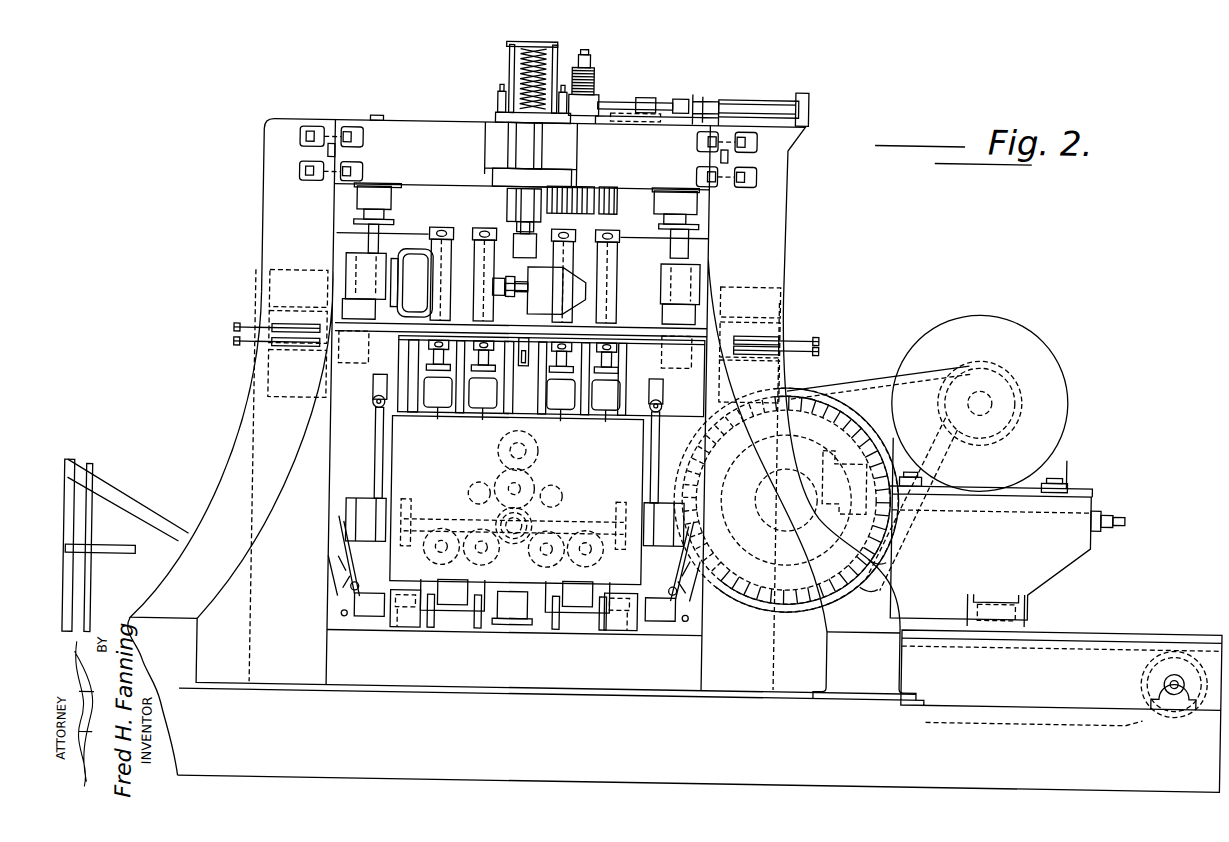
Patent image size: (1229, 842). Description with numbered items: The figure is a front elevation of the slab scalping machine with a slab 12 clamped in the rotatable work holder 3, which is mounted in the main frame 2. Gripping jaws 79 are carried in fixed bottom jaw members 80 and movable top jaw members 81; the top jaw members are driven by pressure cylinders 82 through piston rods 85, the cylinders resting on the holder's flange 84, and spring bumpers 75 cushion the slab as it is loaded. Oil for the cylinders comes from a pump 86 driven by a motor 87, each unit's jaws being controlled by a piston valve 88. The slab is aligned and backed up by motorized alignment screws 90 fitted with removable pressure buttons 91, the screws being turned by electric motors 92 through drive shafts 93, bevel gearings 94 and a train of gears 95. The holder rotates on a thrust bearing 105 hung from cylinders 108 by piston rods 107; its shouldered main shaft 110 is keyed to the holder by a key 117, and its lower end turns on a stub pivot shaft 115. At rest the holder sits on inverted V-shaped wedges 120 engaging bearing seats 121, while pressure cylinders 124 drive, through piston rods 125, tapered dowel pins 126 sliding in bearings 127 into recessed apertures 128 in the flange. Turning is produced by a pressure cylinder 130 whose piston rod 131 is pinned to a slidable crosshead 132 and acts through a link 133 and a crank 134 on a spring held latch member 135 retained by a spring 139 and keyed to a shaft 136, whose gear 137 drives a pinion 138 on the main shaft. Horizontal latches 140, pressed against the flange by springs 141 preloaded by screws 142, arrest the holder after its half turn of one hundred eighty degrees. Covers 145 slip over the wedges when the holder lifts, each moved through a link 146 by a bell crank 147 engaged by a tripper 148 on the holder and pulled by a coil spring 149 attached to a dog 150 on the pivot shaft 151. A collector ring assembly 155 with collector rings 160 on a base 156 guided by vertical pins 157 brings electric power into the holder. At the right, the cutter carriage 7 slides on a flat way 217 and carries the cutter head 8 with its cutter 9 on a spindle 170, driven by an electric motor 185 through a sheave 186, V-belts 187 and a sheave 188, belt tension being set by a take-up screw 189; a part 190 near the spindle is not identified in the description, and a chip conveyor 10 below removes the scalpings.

The main frame 2 is at (433, 160).
The rotatable work holder 3 is at (511, 321).
The cutter carriage 7 is at (973, 546).
The cutter head 8 is at (888, 558).
The cutter 9 is at (880, 585).
The chip conveyor 10 is at (130, 553).
The slab 12 is at (420, 466).
The spring bumper 75 is at (474, 490).
The gripping jaw 79 is at (430, 415).
The bottom jaw member 80 is at (480, 630).
The top jaw member 81 is at (478, 416).
The pressure cylinder 82 is at (448, 266).
The flange 84 is at (622, 327).
The piston rod 85 is at (437, 378).
The pump 86 is at (575, 303).
The motor 87 is at (430, 290).
The piston valve 88 is at (372, 391).
The alignment screw 90 is at (510, 440).
The pressure button 91 is at (510, 447).
The electric motor 92 is at (355, 502).
The drive shaft 93 is at (408, 518).
The bevel gearing 94 is at (534, 522).
The gear 95 is at (538, 452).
The thrust bearing 105 is at (540, 242).
The piston rod 107 is at (513, 220).
The cylinder 108 is at (537, 150).
The main shaft 110 is at (517, 232).
The stub pivot shaft 115 is at (512, 618).
The key 117 is at (518, 368).
The inverted V-shaped wedge 120 is at (406, 610).
The bearing seat 121 is at (400, 632).
The pressure cylinder 124 is at (387, 200).
The piston rod 125 is at (390, 225).
The tapered dowel pin 126 is at (370, 303).
The bearing 127 is at (376, 257).
The recessed aperture 128 is at (367, 345).
The pressure cylinder 130 is at (750, 98).
The piston rod 131 is at (675, 98).
The crosshead 132 is at (675, 122).
The link 133 is at (640, 97).
The crank 134 is at (608, 102).
The latch member 135 is at (590, 96).
The shaft 136 is at (584, 58).
The gear 137 is at (590, 214).
The pinion 138 is at (503, 197).
The spring 139 is at (588, 75).
The horizontal latch 140 is at (296, 362).
The spring 141 is at (296, 312).
The screw 142 is at (232, 347).
The cover 145 is at (372, 620).
The link 146 is at (347, 621).
The bell crank 147 is at (338, 598).
The tripper 148 is at (340, 522).
The coil spring 149 is at (353, 588).
The dog 150 is at (348, 580).
The pivot shaft 151 is at (342, 560).
The collector ring assembly 155 is at (503, 52).
The base 156 is at (490, 118).
The vertical pin 157 is at (492, 100).
The collector ring 160 is at (514, 70).
The spindle 170 is at (800, 520).
The electric motor 185 is at (985, 320).
The sheave 186 is at (948, 410).
The V-belt 187 is at (865, 388).
The sheave 188 is at (862, 420).
The take-up screw 189 is at (1112, 507).
The key 190 is at (811, 491).
The way 217 is at (1000, 596).